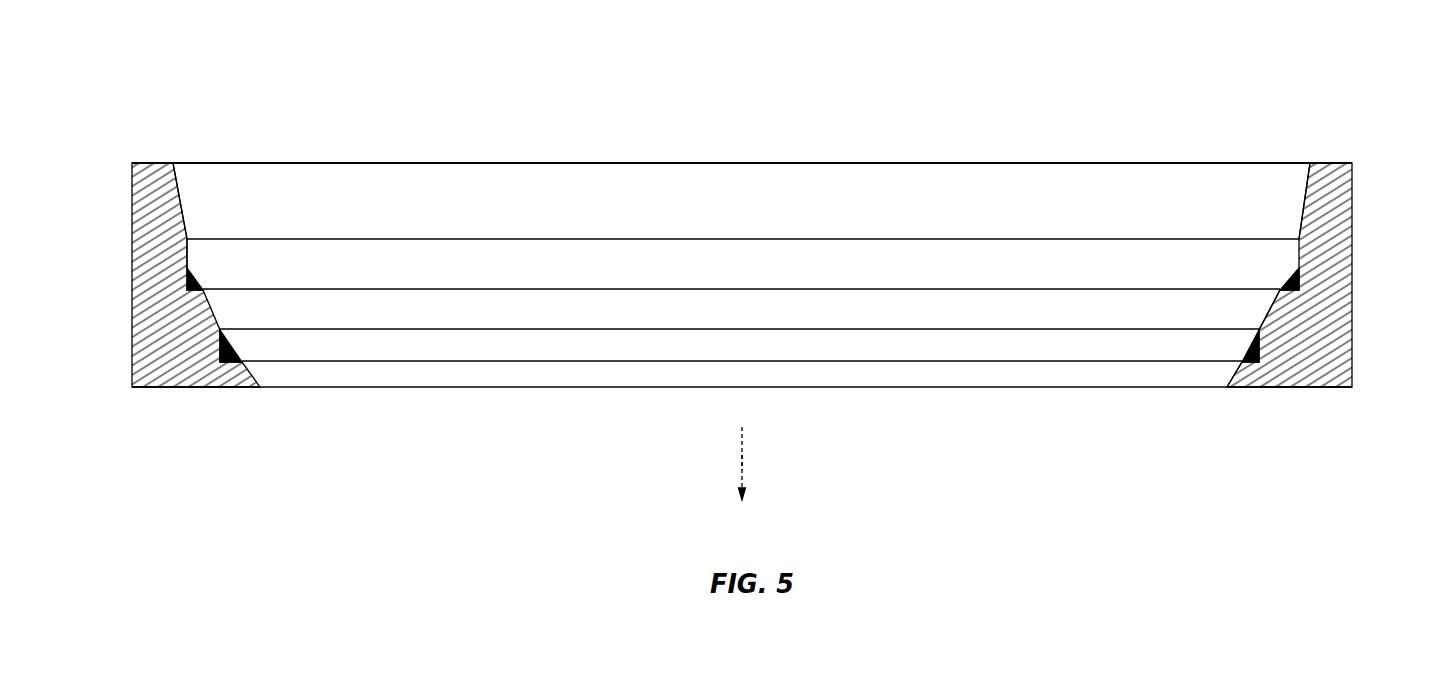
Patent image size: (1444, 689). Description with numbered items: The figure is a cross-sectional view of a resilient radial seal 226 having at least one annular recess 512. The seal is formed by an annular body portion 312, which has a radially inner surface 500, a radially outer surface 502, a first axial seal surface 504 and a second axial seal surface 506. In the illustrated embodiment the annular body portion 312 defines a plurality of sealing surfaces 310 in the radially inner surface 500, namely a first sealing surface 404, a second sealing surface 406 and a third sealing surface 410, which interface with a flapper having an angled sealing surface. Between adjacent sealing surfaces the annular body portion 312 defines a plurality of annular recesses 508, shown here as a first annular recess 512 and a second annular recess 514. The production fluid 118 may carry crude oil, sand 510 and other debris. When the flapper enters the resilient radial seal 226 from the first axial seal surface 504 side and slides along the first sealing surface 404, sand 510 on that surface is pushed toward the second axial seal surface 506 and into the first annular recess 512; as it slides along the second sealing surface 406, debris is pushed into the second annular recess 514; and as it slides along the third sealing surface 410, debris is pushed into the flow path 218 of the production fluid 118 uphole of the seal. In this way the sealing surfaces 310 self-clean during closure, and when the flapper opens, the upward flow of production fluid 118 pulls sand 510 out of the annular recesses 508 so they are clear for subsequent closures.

The resilient radial seal 226 is at (341, 63).
The radially outer surface 502 is at (132, 245).
The first axial seal surface 504 is at (153, 163).
The second axial seal surface 506 is at (217, 387).
The annular body portion 312 is at (188, 384).
The plurality of sealing surfaces 310 is at (181, 202).
The radially inner surface 500 is at (188, 230).
The sand 510 is at (198, 281).
The first annular recess 512 is at (186, 260).
The second annular recess 514 is at (222, 338).
The first sealing surface 404 is at (1302, 200).
The second sealing surface 406 is at (1271, 308).
The third sealing surface 410 is at (1236, 365).
The plurality of annular recesses 508 is at (1283, 265).
The production fluid 118 is at (742, 453).
The flow path 218 is at (742, 463).